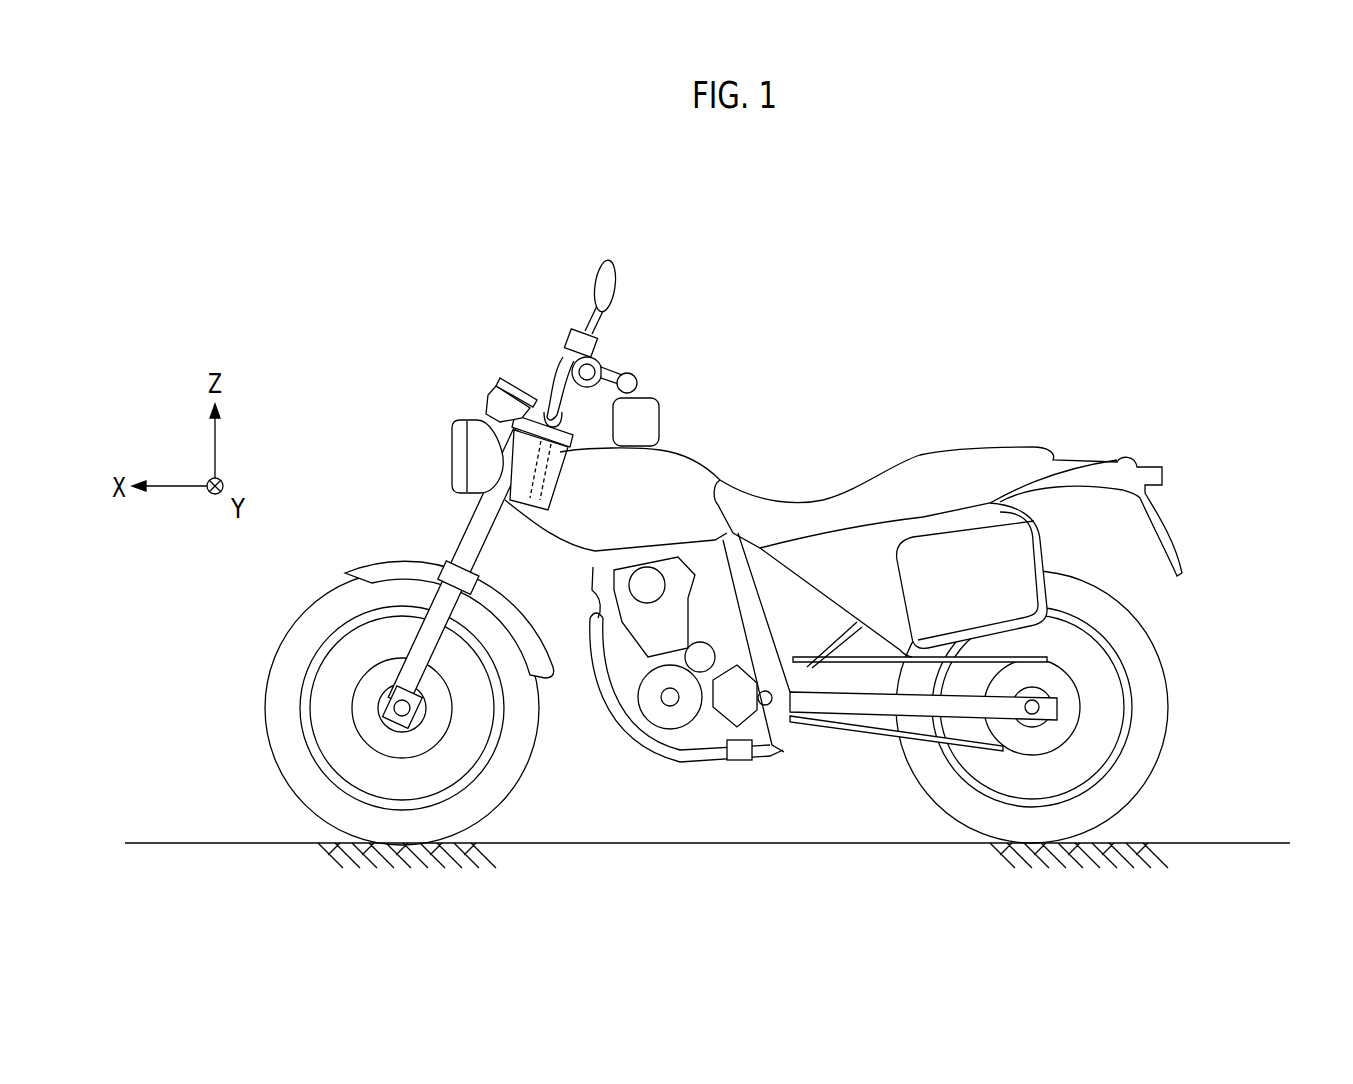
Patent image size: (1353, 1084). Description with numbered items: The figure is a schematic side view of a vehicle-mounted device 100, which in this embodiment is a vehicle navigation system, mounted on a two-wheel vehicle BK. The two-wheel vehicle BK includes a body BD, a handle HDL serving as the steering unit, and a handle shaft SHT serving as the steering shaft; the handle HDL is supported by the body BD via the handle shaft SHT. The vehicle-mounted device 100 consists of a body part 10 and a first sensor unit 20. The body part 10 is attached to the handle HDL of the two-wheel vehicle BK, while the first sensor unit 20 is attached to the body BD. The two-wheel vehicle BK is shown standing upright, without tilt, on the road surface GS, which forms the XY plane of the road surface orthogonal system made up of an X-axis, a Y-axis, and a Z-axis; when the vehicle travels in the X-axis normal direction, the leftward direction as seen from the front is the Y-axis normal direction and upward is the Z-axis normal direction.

The vehicle-mounted device 100 is at (870, 270).
The body part 10 is at (568, 345).
The first sensor unit 20 is at (652, 424).
The handle HDL is at (611, 366).
The handle shaft SHT is at (540, 500).
The body BD is at (697, 466).
The two-wheel vehicle BK is at (929, 416).
The road surface GS is at (205, 843).